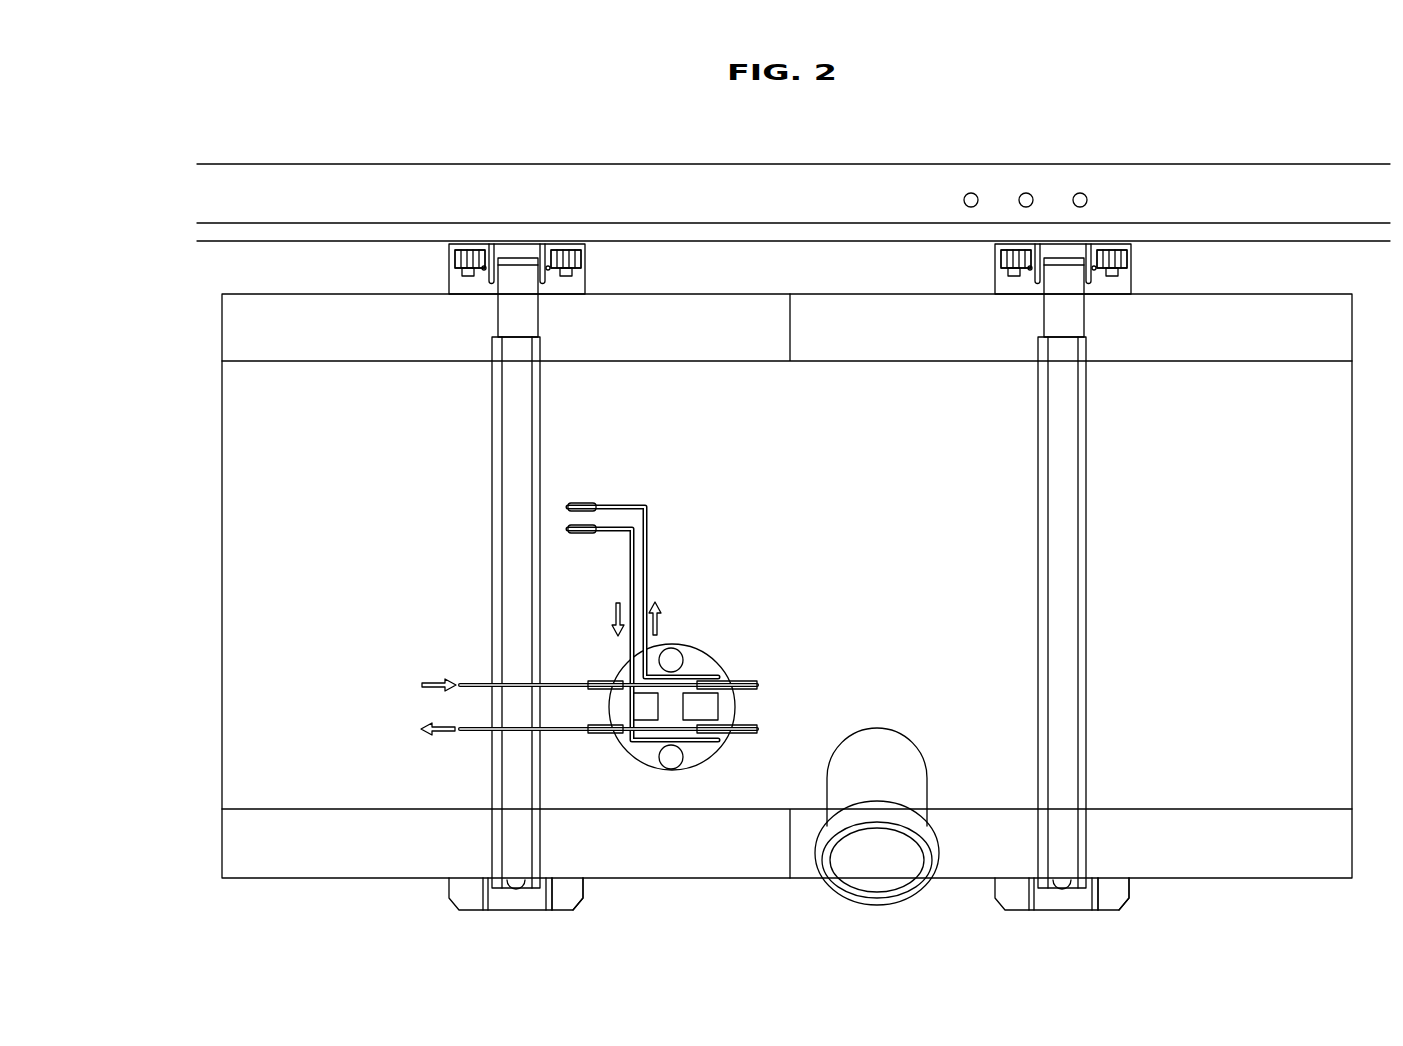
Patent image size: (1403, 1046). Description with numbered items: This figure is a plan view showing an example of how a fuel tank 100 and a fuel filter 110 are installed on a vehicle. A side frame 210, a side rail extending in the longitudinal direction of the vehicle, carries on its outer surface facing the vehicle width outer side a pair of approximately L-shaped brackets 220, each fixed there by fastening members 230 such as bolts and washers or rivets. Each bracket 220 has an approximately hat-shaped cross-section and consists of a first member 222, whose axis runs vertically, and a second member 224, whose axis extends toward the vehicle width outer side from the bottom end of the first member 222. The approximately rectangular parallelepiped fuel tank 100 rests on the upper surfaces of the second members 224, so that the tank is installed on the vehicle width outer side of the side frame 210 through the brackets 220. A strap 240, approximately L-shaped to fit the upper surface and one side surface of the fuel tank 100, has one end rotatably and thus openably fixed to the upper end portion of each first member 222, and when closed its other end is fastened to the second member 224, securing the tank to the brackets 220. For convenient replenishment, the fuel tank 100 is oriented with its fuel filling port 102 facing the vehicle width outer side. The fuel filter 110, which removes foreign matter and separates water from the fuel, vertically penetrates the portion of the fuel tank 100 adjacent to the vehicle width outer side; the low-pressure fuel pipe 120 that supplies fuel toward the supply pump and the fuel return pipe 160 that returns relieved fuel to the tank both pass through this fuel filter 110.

The fuel tank 100 is at (210, 401).
The fuel filling port 102 is at (852, 892).
The fuel filter 110 is at (728, 658).
The low-pressure fuel pipe 120 is at (578, 735).
The fuel return pipe 160 is at (578, 682).
The side frame 210 is at (830, 163).
The bracket 220 is at (443, 909).
The first member 222 is at (455, 243).
The second member 224 is at (586, 908).
The fastening member 230 is at (477, 243).
The strap 240 is at (486, 500).